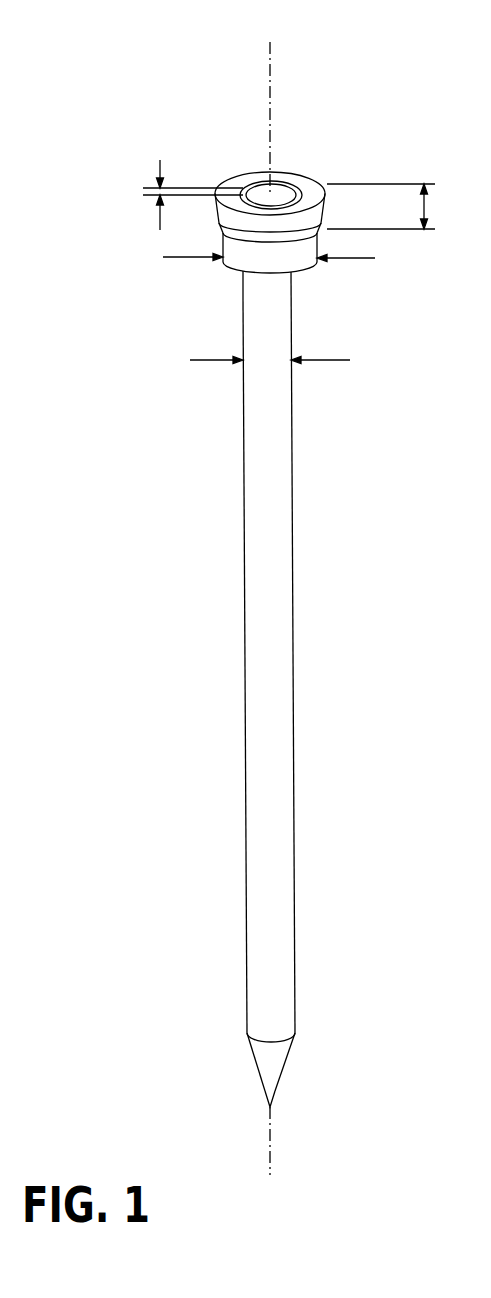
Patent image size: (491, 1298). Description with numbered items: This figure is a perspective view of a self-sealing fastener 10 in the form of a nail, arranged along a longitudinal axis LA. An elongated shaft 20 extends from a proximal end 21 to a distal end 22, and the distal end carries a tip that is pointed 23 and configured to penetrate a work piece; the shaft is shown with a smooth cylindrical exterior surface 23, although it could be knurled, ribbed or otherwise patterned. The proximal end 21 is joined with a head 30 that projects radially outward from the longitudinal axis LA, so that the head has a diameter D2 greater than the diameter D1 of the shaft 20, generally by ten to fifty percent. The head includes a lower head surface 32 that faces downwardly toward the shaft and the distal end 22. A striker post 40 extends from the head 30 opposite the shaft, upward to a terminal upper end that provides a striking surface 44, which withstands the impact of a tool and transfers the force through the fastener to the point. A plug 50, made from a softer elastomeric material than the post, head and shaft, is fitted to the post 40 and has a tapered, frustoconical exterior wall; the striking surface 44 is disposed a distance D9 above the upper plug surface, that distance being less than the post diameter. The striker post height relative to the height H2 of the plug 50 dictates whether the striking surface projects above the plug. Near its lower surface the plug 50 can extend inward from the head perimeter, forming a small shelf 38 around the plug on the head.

The fastener 10 is at (153, 428).
The elongated shaft 20 is at (239, 718).
The proximal end 21 is at (238, 281).
The distal end 22 is at (255, 1065).
The pointed tip 23 is at (270, 1107).
The head 30 is at (239, 185).
The lower head surface 32 is at (315, 178).
The shelf 38 is at (218, 231).
The striker post 40 is at (285, 193).
The striking surface 44 is at (270, 193).
The plug 50 is at (330, 204).
The longitudinal axis LA is at (270, 87).
The diameter of the shaft D1 is at (288, 361).
The head diameter D2 is at (287, 259).
The distance D9 is at (193, 180).
The height of the plug H2 is at (426, 206).